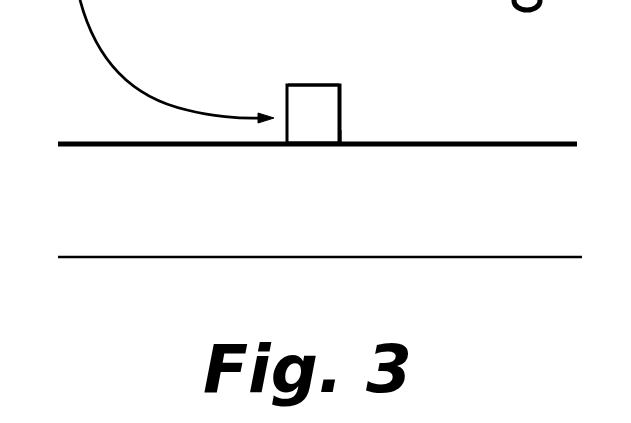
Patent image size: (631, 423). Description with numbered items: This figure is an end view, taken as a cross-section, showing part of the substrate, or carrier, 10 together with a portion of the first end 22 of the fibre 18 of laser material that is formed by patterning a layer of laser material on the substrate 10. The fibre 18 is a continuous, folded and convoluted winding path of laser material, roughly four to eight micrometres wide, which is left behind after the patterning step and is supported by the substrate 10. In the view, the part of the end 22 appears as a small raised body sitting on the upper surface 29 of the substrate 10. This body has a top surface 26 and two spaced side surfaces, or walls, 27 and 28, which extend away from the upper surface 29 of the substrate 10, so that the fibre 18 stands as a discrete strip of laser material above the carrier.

The substrate 10 is at (423, 200).
The fibre 18 is at (320, 106).
The first end 22 is at (327, 75).
The top surface 26 is at (299, 85).
The side surface 27 is at (285, 102).
The side surface 28 is at (342, 125).
The upper surface 29 is at (533, 143).